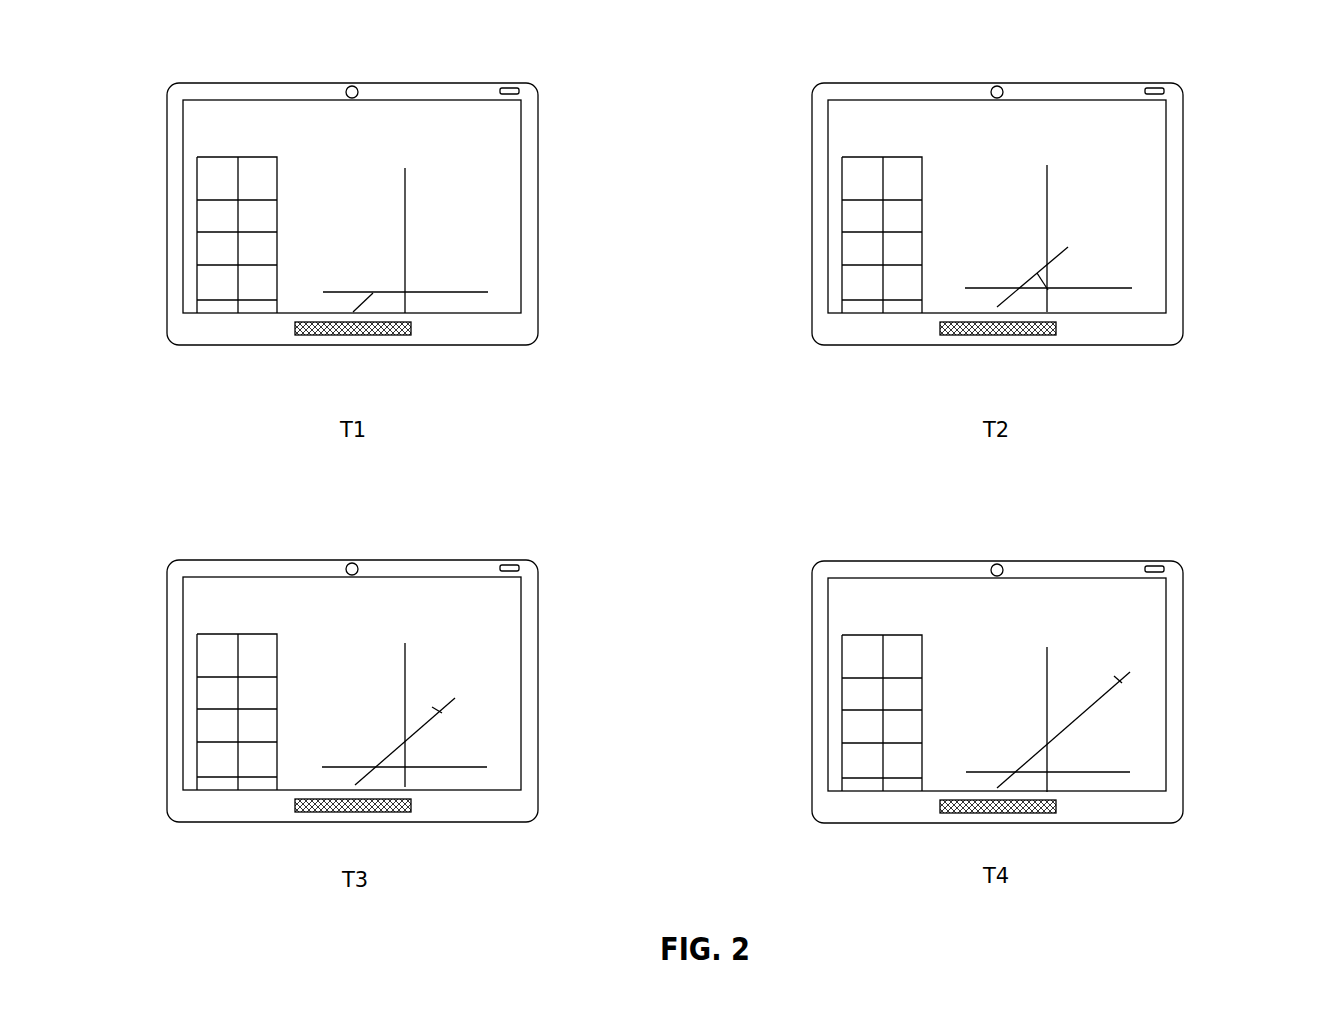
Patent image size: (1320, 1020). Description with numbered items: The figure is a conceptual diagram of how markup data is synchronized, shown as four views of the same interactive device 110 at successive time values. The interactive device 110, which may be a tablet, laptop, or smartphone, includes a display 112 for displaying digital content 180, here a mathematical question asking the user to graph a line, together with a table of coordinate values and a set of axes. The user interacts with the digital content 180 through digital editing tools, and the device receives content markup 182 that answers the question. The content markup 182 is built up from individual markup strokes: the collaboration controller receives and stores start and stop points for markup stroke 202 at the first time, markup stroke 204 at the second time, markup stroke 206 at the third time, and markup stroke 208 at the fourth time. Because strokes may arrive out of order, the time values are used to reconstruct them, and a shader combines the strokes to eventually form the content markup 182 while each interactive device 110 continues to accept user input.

The interactive device 110 is at (390, 82).
The display 112 is at (235, 100).
The digital content 180 is at (457, 113).
The content markup 182 is at (1060, 735).
The markup stroke 202 is at (373, 293).
The markup stroke 204 is at (1048, 290).
The markup stroke 206 is at (442, 713).
The markup stroke 208 is at (1122, 683).